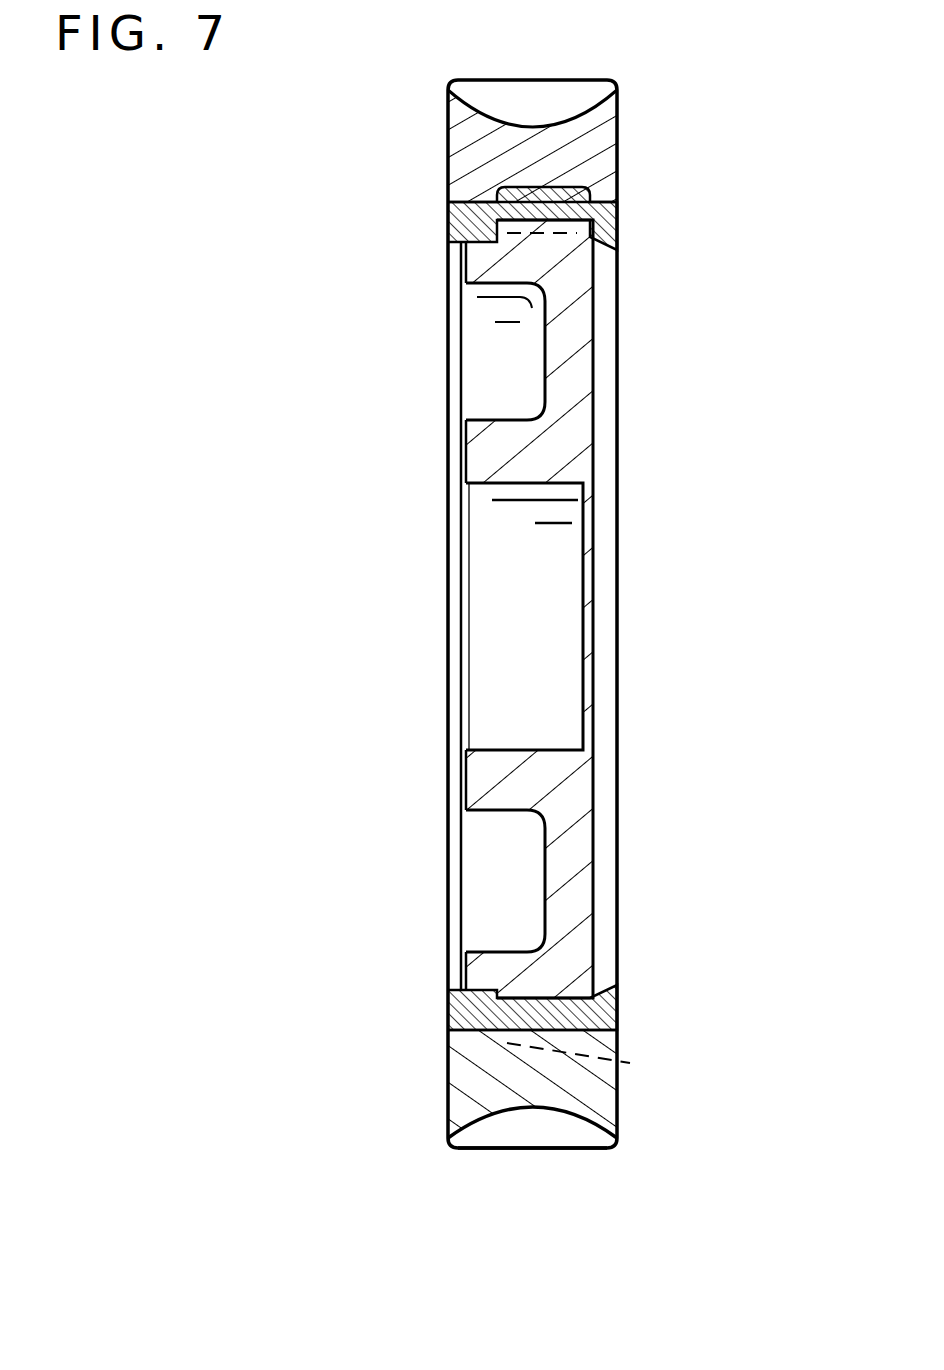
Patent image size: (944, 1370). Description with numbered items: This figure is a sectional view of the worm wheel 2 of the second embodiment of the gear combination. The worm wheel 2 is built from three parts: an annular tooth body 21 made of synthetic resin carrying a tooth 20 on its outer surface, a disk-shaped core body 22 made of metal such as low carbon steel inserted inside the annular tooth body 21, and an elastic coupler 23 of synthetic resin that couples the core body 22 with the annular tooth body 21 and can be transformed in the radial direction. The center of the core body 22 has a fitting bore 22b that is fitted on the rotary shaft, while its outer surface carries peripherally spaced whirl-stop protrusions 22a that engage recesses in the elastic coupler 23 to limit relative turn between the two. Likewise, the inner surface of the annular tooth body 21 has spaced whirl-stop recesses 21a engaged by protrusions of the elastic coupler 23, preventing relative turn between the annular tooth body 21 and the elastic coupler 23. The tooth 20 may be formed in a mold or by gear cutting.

The worm wheel 2 is at (422, 1026).
The tooth 20 is at (543, 1135).
The annular tooth body 21 is at (603, 1095).
The whirl-stop recesses 21a is at (517, 1043).
The core body 22 is at (577, 855).
The whirl-stop protrusions 22a is at (630, 1063).
The fitting bore 22b is at (547, 748).
The elastic coupler 23 is at (597, 1012).